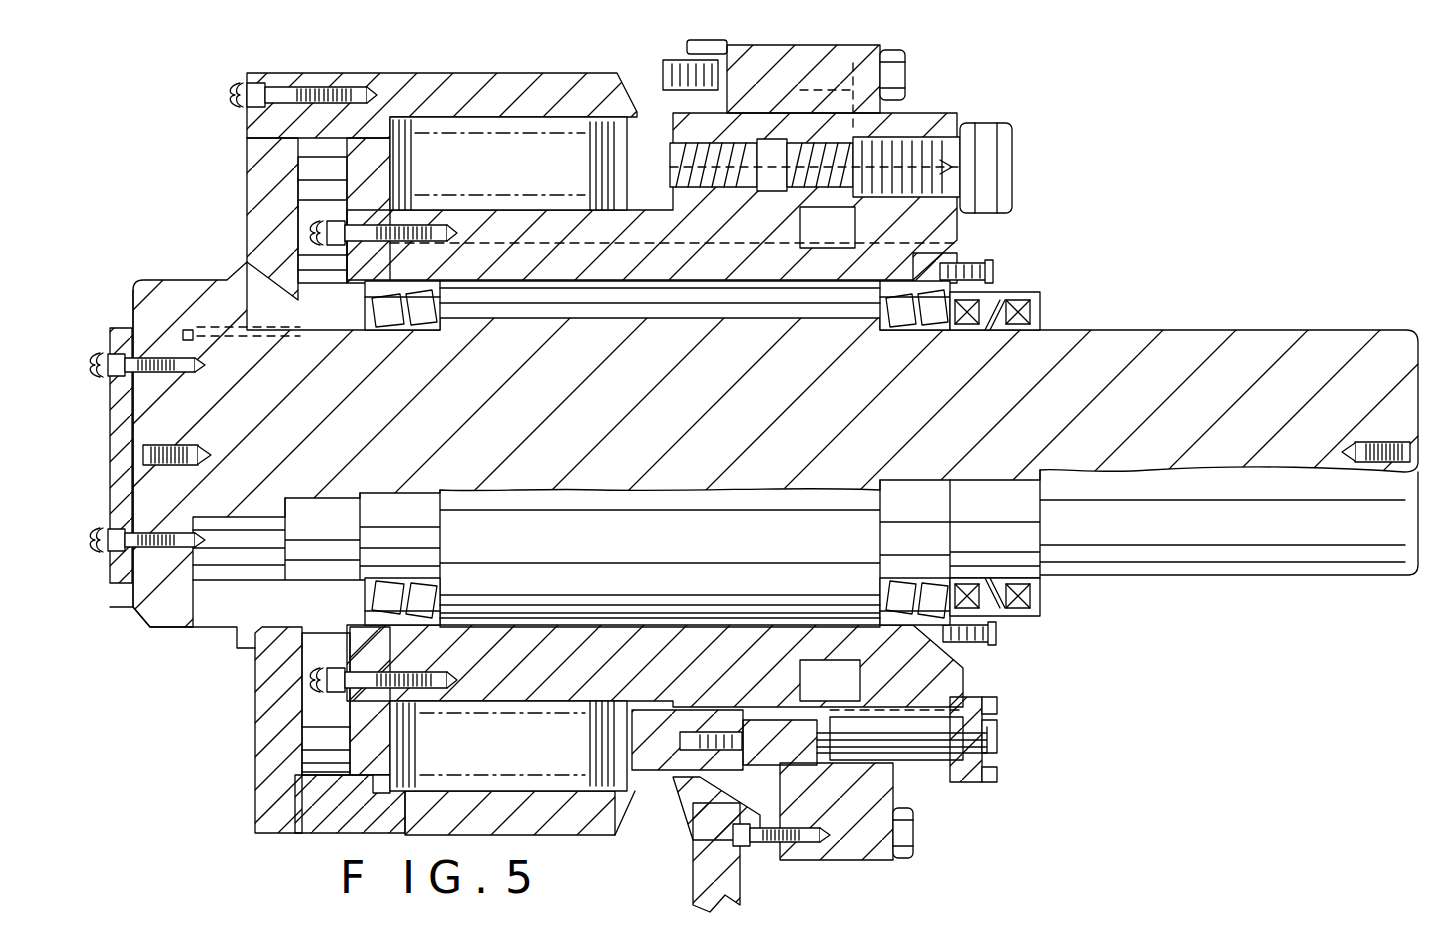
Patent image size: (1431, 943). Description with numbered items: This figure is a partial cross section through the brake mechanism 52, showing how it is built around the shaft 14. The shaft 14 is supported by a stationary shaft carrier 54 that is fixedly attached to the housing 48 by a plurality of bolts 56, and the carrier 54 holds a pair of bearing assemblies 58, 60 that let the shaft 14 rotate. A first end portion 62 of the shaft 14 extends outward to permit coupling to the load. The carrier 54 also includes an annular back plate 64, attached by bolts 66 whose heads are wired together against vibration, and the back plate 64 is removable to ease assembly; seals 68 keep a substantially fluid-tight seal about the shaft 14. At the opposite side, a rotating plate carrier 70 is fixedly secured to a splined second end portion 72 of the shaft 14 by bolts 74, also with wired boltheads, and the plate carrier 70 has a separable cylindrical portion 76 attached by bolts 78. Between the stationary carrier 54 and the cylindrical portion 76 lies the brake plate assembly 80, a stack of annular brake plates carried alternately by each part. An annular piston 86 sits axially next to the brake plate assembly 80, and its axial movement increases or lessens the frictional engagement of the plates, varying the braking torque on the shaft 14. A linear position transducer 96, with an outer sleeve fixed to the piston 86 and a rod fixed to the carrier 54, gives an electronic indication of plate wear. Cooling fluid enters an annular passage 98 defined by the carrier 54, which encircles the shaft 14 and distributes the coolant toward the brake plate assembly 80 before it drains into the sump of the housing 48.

The shaft 14 is at (676, 424).
The housing 48 is at (695, 837).
The brake mechanism 52 is at (1176, 145).
The stationary shaft carrier 54 is at (968, 692).
The bolts 56 is at (905, 73).
The bearing assembly 58 is at (445, 602).
The bearing assembly 60 is at (925, 283).
The first end portion 62 is at (1350, 330).
The annular back plate 64 is at (300, 194).
The bolts 66 is at (326, 236).
The seals 68 is at (1035, 320).
The rotating plate carrier 70 is at (160, 628).
The second end portion 72 is at (163, 340).
The bolts 74 is at (110, 362).
The cylindrical portion 76 is at (448, 73).
The bolts 78 is at (238, 98).
The brake plate assembly 80 is at (482, 178).
The annular piston 86 is at (656, 115).
The linear position transducer 96 is at (870, 762).
The annular passage 98 is at (960, 700).